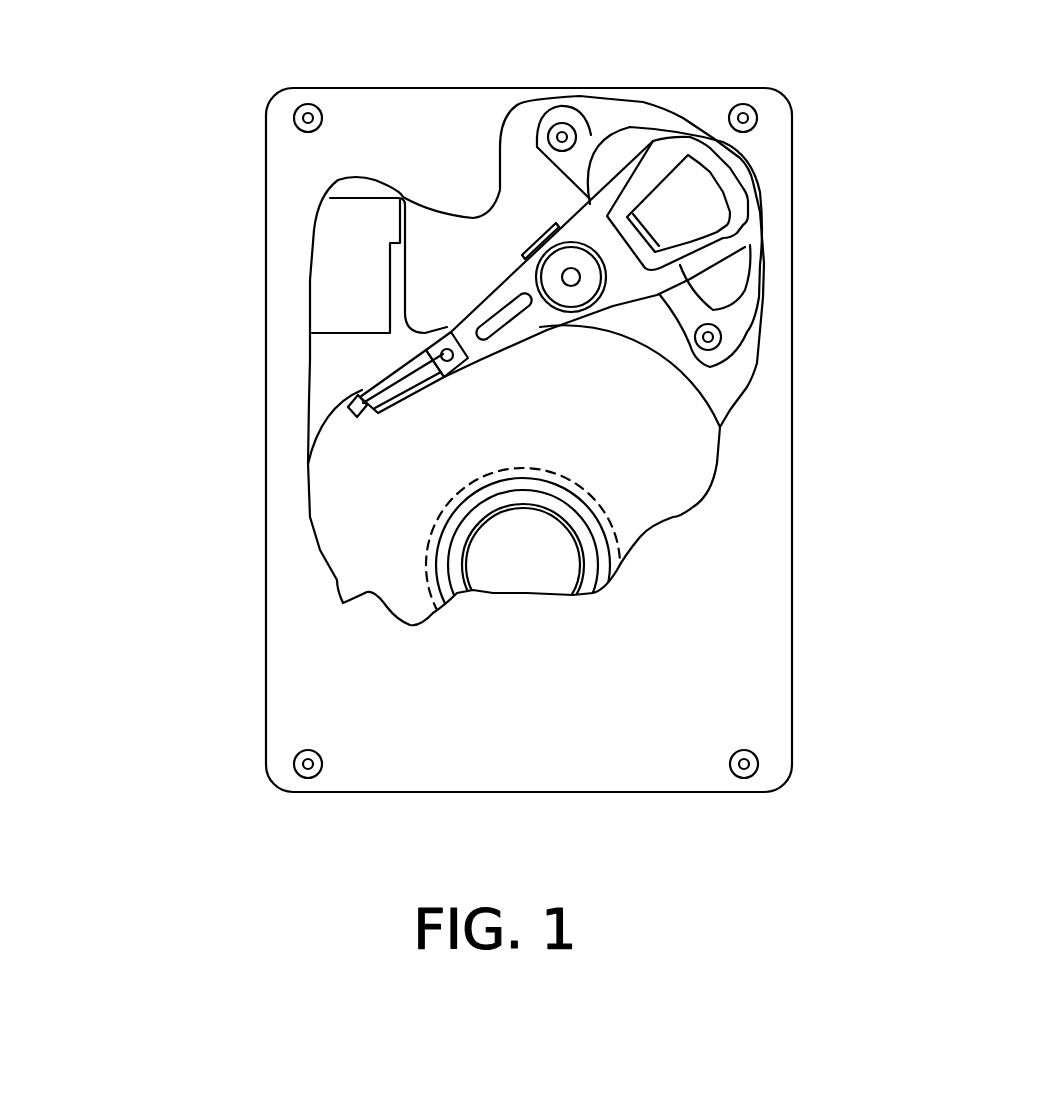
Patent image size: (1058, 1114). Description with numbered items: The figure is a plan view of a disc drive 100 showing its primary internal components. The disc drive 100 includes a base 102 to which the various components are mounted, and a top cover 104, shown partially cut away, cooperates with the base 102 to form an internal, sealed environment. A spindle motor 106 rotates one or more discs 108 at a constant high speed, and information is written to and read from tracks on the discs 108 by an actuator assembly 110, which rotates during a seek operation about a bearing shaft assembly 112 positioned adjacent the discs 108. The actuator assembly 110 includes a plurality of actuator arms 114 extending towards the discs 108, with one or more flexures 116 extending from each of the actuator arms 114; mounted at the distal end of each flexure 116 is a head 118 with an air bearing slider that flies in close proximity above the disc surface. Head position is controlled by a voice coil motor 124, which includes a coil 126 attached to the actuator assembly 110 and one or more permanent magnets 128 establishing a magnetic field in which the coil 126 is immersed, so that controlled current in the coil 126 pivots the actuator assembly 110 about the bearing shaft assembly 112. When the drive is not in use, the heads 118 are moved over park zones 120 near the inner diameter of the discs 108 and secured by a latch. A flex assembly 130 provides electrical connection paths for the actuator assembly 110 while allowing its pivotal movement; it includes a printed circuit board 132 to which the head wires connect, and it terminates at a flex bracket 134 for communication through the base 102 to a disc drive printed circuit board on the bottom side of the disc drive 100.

The disc drive 100 is at (230, 70).
The base 102 is at (333, 357).
The top cover 104 is at (323, 672).
The spindle motor 106 is at (521, 566).
The disc 108 is at (662, 498).
The actuator assembly 110 is at (549, 352).
The bearing shaft assembly 112 is at (576, 280).
The actuator arm 114 is at (512, 345).
The flexure 116 is at (388, 397).
The head 118 is at (350, 423).
The park zone 120 is at (423, 567).
The voice coil motor 124 is at (633, 147).
The coil 126 is at (745, 206).
The permanent magnet 128 is at (596, 162).
The flex assembly 130 is at (487, 282).
The printed circuit board 132 is at (540, 243).
The flex bracket 134 is at (345, 257).